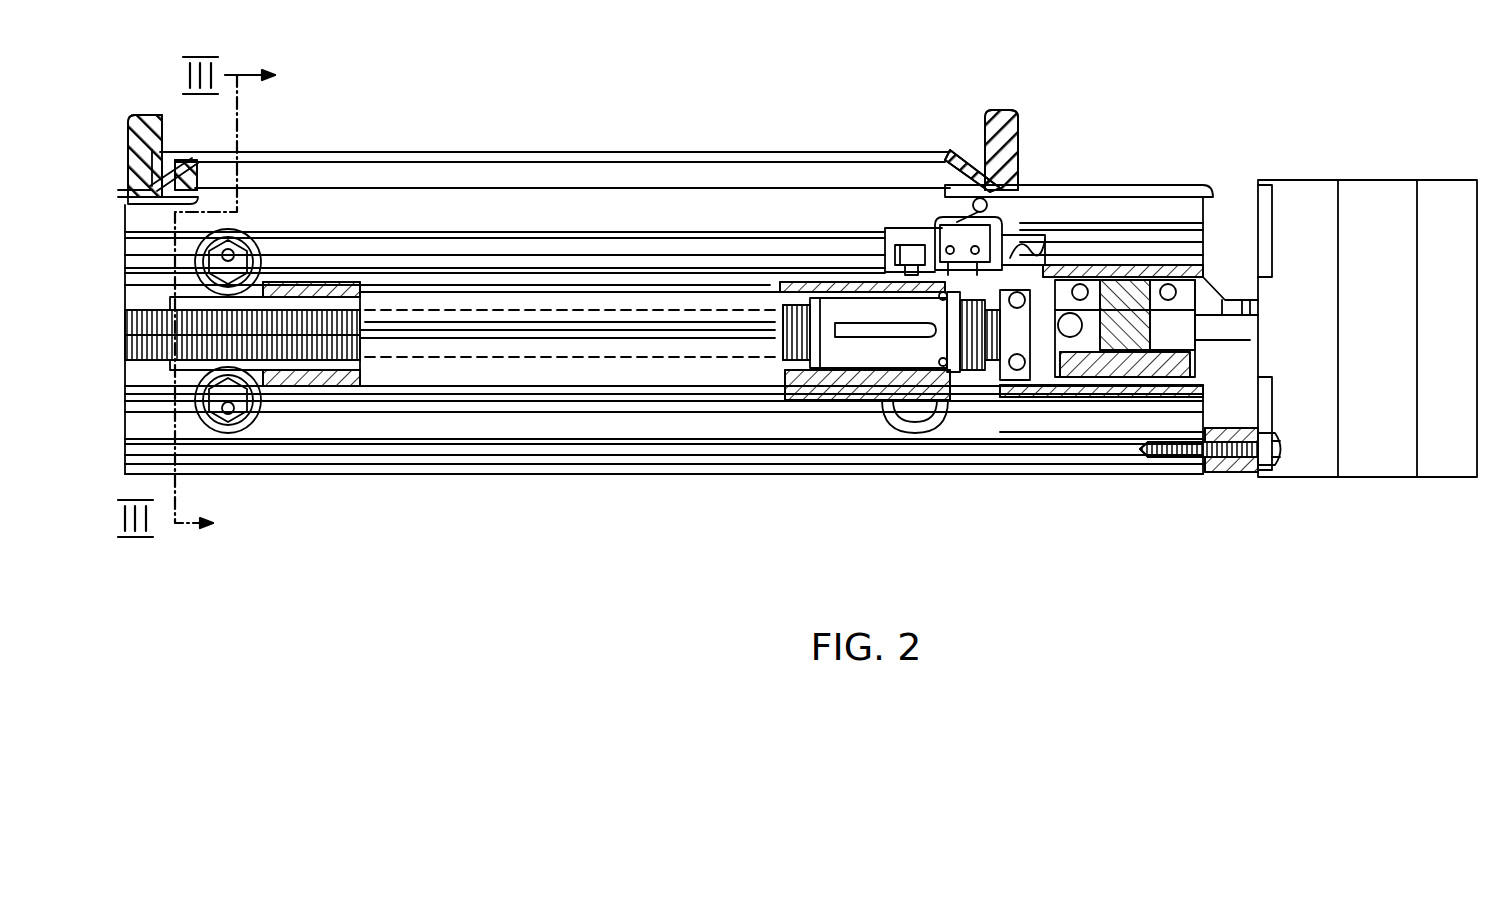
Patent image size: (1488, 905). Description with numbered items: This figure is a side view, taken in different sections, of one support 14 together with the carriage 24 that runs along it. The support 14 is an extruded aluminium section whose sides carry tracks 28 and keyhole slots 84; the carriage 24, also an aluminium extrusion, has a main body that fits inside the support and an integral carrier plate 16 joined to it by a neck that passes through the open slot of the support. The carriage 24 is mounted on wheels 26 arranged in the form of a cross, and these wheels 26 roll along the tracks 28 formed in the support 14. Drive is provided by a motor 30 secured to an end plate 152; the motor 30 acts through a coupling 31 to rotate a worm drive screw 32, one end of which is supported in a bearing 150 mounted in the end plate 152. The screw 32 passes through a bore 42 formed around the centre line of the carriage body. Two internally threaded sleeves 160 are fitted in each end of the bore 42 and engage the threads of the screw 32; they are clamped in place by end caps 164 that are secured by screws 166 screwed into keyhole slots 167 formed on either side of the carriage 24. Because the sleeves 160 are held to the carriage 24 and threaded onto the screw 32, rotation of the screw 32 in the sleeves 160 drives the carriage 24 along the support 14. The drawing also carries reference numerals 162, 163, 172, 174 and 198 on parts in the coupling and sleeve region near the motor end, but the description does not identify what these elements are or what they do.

The support 14 is at (1137, 230).
The carrier plate 16 is at (822, 175).
The carriage 24 is at (527, 213).
The wheels 26 is at (263, 262).
The tracks 28 is at (402, 245).
The motor 30 is at (1365, 205).
The coupling 31 is at (1125, 365).
The worm drive screw 32 is at (302, 347).
The bore 42 is at (775, 300).
The keyhole slots 84 is at (488, 452).
The bearing 150 is at (1045, 367).
The end plate 152 is at (1220, 474).
The sleeves 160 is at (285, 386).
The collar 162 is at (977, 357).
The switch 163 is at (958, 300).
The end caps 164 is at (963, 372).
The screws 166 is at (983, 330).
The keyhole slots 167 is at (558, 335).
The coupling 172 is at (862, 358).
The drive shaft 174 is at (838, 326).
The nut 198 is at (328, 368).